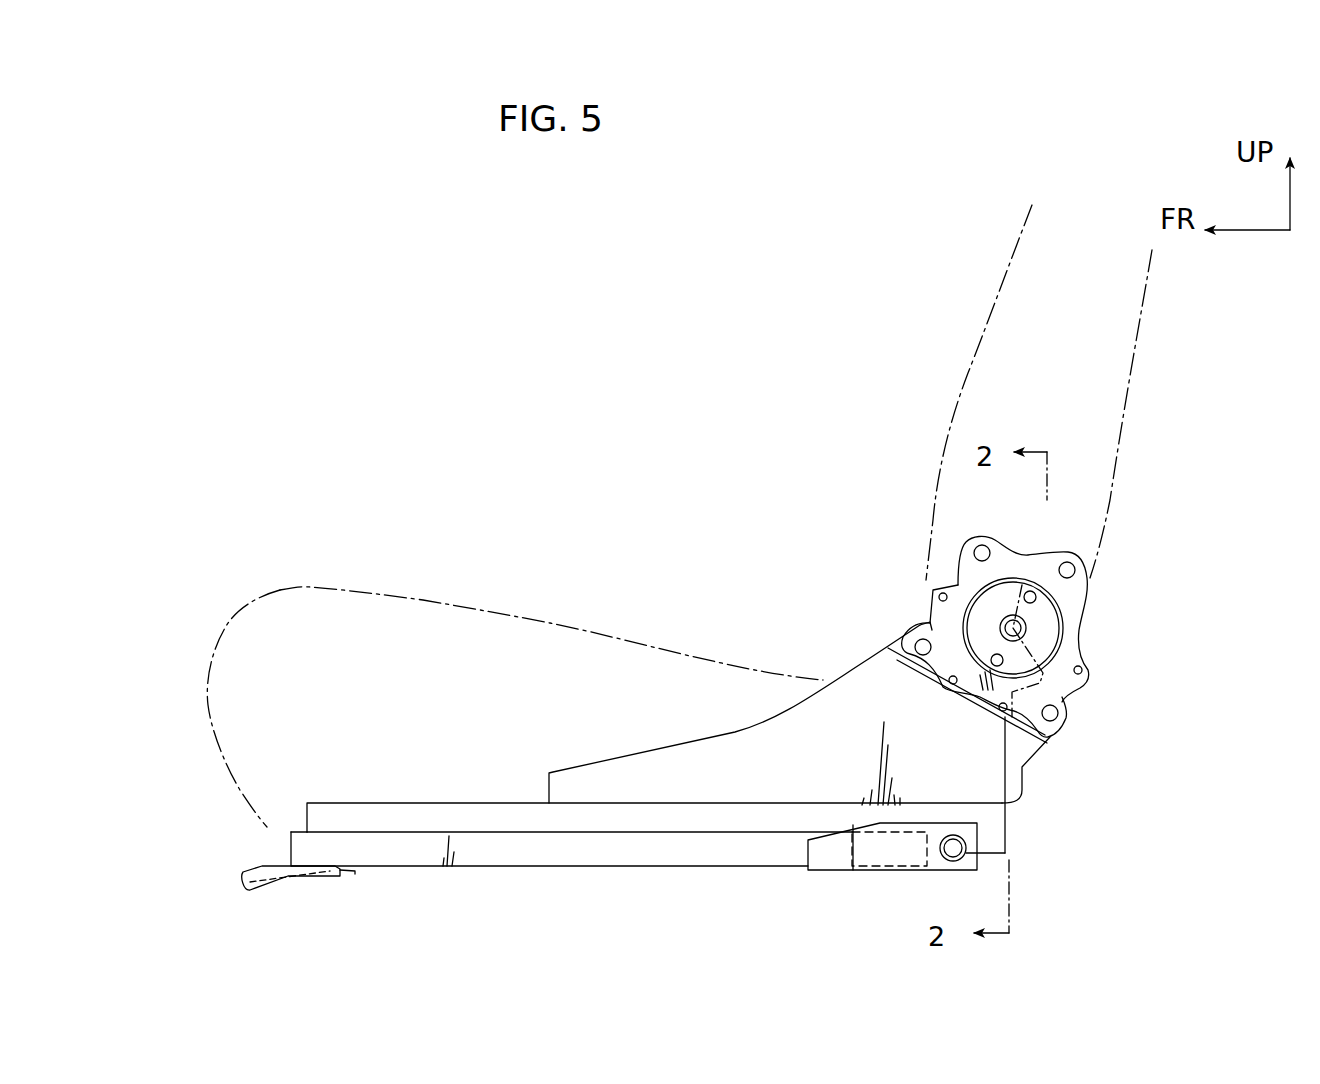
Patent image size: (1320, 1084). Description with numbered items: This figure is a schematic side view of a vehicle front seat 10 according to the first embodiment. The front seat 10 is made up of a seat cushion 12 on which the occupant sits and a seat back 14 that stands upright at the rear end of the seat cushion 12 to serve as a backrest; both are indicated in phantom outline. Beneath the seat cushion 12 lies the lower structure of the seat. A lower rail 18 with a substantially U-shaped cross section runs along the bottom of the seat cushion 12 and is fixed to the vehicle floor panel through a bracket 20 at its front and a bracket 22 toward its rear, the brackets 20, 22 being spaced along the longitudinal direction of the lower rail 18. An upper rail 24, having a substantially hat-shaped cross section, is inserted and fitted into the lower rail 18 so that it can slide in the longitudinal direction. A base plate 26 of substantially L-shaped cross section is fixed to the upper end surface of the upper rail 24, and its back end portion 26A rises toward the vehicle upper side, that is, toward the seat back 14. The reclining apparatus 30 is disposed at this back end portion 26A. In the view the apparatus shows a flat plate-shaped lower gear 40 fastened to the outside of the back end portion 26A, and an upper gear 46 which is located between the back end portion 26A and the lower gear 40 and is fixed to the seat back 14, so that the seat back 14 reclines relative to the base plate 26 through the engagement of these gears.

The front seat 10 is at (747, 456).
The seat cushion 12 is at (500, 617).
The seat back 14 is at (967, 372).
The lower rail 18 is at (558, 868).
The bracket 20 is at (270, 881).
The bracket 22 is at (930, 870).
The upper rail 24 is at (682, 820).
The base plate 26 is at (788, 702).
The back end portion of the base plate 26A is at (908, 635).
The inner side reclining apparatus 30 is at (1127, 604).
The lower gear 40 is at (1068, 688).
The upper gear 46 is at (1082, 586).